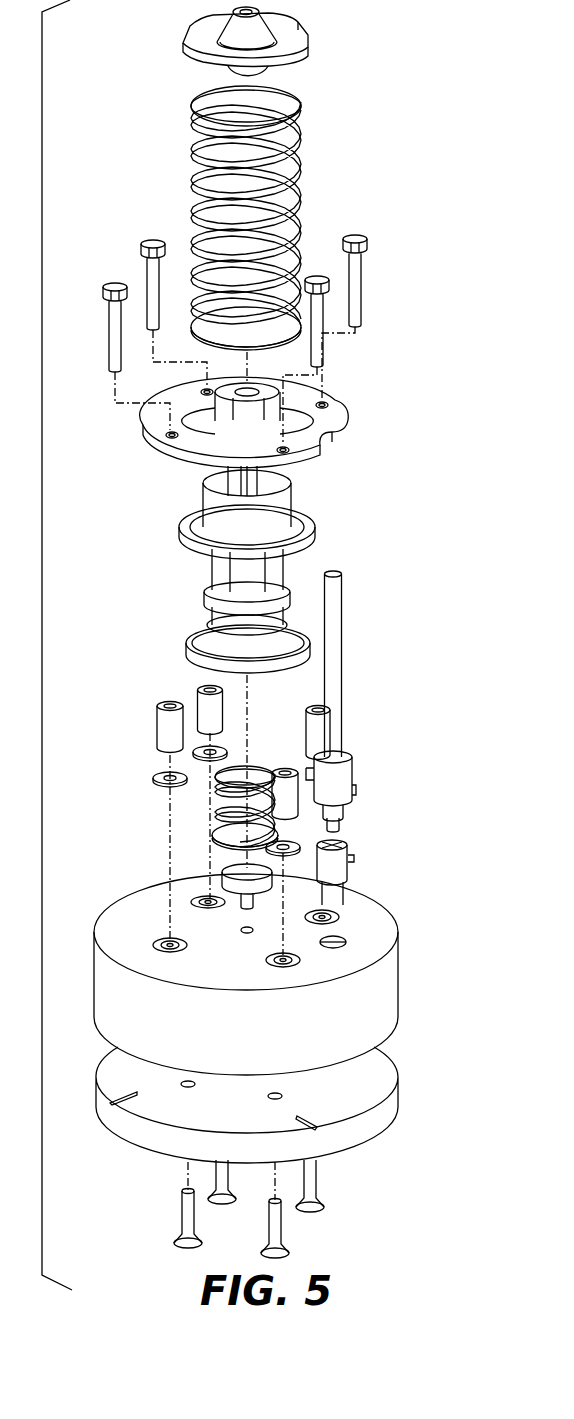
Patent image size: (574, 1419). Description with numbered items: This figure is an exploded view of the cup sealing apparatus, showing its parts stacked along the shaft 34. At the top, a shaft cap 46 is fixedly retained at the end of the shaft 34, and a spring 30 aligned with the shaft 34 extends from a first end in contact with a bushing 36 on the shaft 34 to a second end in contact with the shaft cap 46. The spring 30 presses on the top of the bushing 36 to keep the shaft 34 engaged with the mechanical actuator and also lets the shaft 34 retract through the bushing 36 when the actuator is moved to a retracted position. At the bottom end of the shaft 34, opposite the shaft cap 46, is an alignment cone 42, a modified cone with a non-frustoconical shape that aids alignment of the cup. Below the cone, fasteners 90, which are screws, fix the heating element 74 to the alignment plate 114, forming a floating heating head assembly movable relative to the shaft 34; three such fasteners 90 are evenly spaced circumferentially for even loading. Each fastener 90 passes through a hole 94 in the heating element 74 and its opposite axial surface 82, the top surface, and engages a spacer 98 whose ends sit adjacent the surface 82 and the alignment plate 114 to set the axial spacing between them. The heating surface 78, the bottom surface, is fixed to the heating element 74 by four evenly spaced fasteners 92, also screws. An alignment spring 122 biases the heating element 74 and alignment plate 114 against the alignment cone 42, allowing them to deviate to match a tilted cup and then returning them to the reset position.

The shaft cap 46 is at (300, 28).
The spring 30 is at (302, 192).
The fastener 90 is at (150, 278).
The alignment plate 114 is at (334, 414).
The shaft 34 is at (258, 428).
The bushing 36 is at (273, 514).
The alignment cone 42 is at (204, 638).
The spacer 98 is at (168, 724).
The alignment spring 122 is at (218, 808).
The opposite axial surface 82 is at (156, 892).
The hole 94 is at (169, 942).
The heating element 74 is at (257, 952).
The heating surface 78 is at (380, 1118).
The fastener 92 is at (215, 1173).